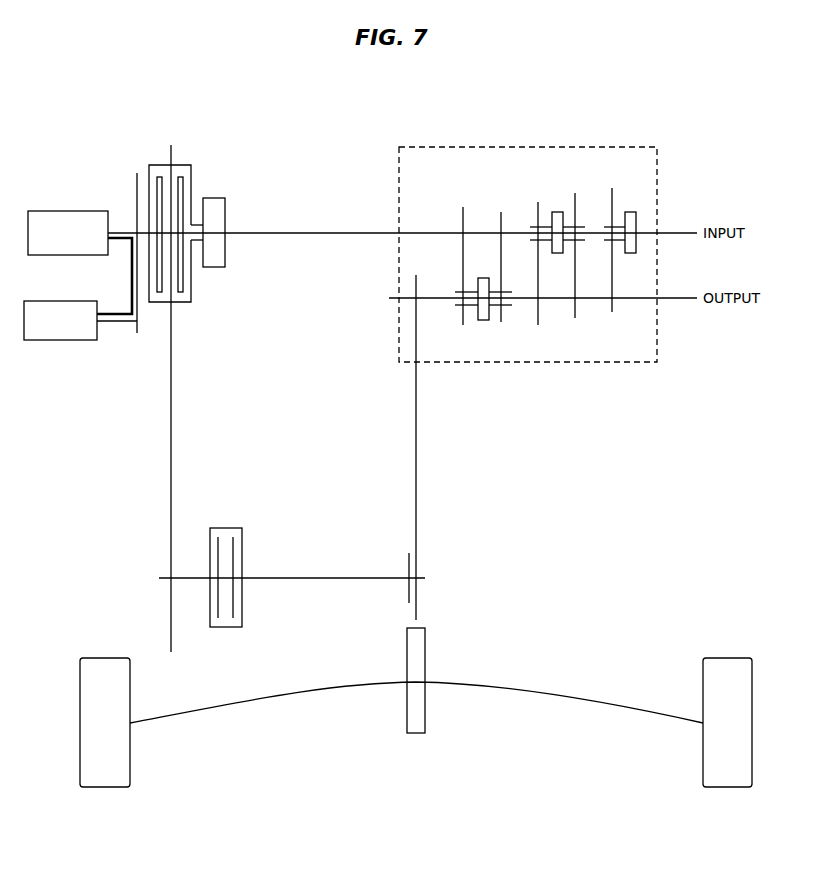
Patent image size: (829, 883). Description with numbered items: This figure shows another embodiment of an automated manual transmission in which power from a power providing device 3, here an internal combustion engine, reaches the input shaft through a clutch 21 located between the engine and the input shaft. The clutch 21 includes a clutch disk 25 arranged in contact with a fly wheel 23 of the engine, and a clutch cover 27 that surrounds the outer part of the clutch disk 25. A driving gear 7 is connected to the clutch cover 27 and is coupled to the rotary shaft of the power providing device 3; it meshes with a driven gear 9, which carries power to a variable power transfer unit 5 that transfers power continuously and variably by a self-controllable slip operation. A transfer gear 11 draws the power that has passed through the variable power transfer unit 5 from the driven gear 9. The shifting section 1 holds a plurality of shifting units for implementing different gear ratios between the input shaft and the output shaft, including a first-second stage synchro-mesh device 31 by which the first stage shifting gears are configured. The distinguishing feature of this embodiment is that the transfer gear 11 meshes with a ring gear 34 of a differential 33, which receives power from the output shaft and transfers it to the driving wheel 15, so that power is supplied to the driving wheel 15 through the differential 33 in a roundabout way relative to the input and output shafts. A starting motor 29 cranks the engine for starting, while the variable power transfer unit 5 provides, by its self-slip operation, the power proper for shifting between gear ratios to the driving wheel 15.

The shifting section 1 is at (630, 147).
The power providing device 3 is at (40, 210).
The variable power transfer unit 5 is at (245, 618).
The driving gear 7 is at (175, 246).
The driven gear 9 is at (171, 535).
The transfer gear 11 is at (405, 562).
The driving wheel 15 is at (105, 655).
The clutch 21 is at (155, 310).
The fly wheel 23 is at (137, 173).
The clutch disk 25 is at (173, 164).
The clutch cover 27 is at (191, 178).
The starting motor 29 is at (60, 340).
The first-second stage synchro-mesh device 31 is at (480, 320).
The differential 33 is at (440, 663).
The ring gear 34 is at (422, 710).